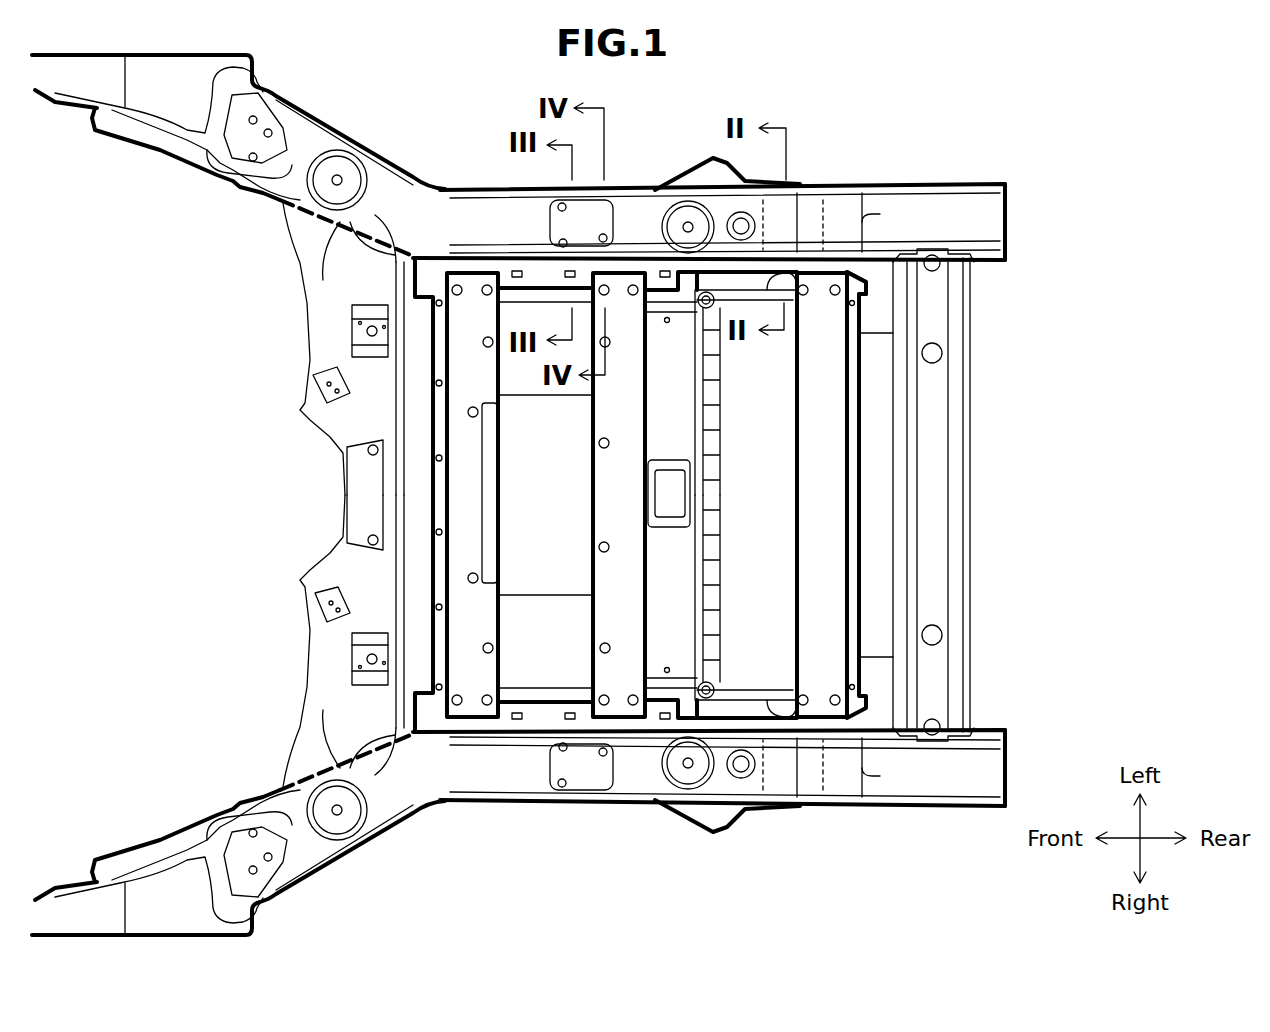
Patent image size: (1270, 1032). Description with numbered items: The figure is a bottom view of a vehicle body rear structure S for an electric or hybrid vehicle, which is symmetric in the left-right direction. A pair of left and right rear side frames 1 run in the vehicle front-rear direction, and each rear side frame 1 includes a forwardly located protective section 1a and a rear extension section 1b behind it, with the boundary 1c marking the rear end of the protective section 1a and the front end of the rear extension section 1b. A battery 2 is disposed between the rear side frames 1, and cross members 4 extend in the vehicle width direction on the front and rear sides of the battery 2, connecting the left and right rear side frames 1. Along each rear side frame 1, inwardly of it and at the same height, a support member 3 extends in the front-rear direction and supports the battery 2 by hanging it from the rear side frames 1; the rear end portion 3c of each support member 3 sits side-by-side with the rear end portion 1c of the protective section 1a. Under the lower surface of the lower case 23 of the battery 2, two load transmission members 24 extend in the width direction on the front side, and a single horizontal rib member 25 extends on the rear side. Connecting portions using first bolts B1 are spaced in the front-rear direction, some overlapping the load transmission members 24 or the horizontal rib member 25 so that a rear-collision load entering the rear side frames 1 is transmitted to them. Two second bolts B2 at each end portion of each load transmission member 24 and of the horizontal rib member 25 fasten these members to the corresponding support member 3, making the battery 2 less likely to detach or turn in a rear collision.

The rear side frame 1 is at (990, 177).
The protective section 1a is at (797, 182).
The rear extension section 1b is at (932, 182).
The boundary between protective section and rear extension section 1c is at (871, 210).
The battery 2 is at (866, 487).
The support member 3 is at (873, 276).
The rear end portion of support member 3c is at (878, 293).
The cross member 4 is at (353, 497).
The lower case 23 is at (772, 610).
The load transmission member 24 is at (598, 457).
The horizontal rib member 25 is at (828, 442).
The first bolt B1 is at (560, 207).
The second bolt B2 is at (457, 285).
The vehicle body rear structure S is at (965, 127).